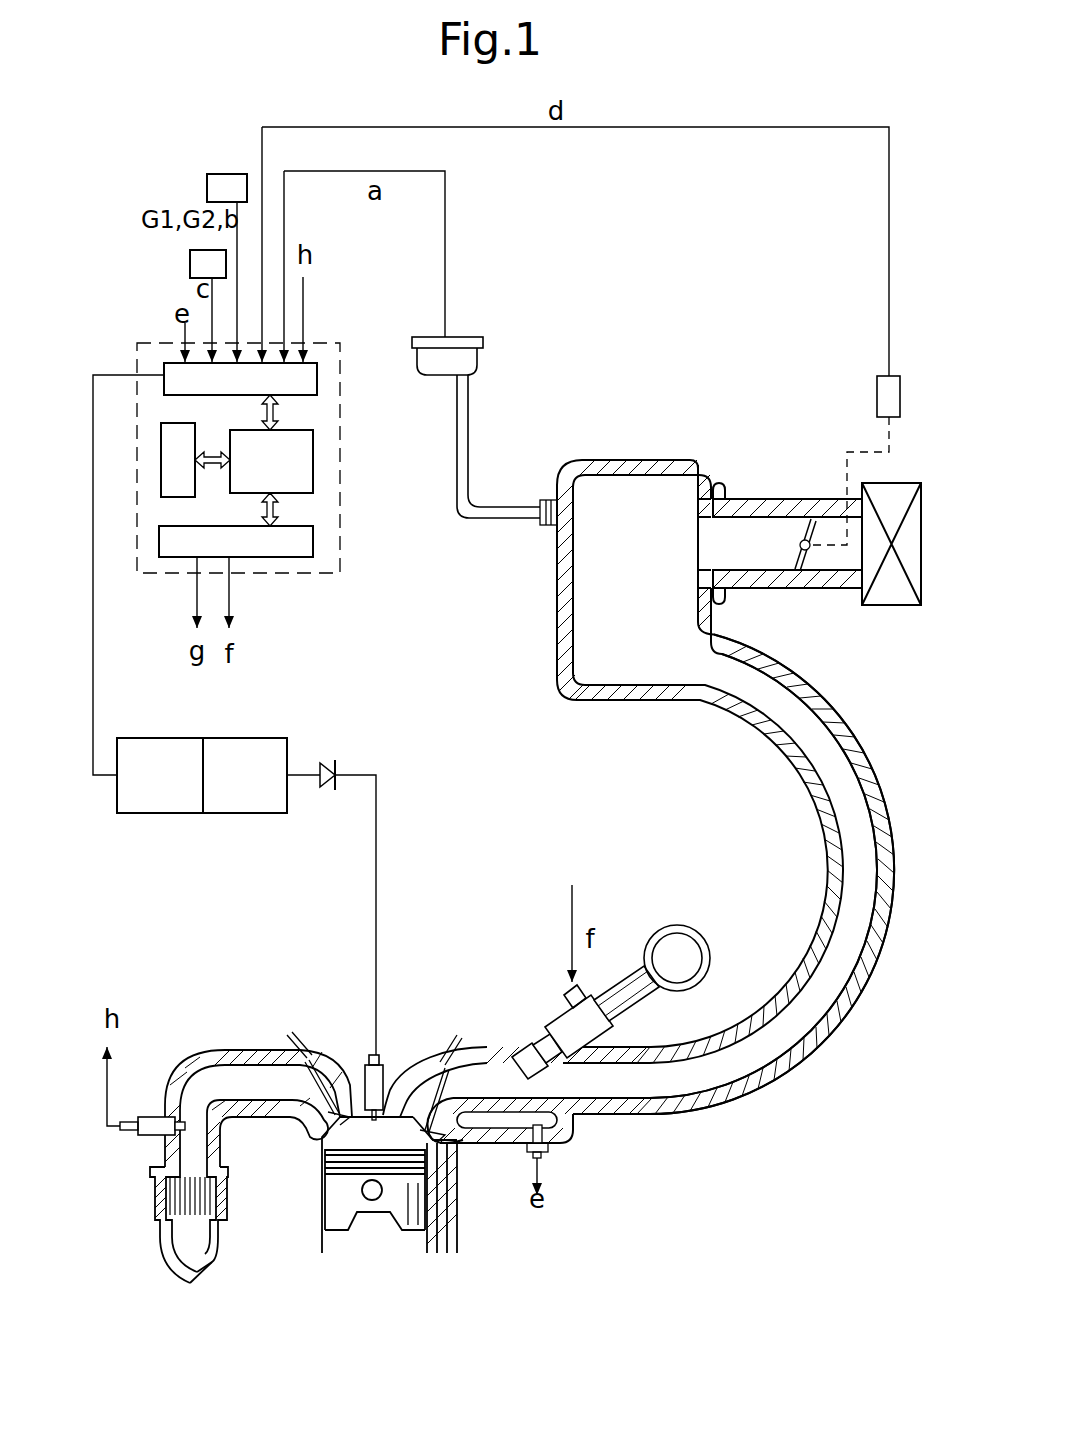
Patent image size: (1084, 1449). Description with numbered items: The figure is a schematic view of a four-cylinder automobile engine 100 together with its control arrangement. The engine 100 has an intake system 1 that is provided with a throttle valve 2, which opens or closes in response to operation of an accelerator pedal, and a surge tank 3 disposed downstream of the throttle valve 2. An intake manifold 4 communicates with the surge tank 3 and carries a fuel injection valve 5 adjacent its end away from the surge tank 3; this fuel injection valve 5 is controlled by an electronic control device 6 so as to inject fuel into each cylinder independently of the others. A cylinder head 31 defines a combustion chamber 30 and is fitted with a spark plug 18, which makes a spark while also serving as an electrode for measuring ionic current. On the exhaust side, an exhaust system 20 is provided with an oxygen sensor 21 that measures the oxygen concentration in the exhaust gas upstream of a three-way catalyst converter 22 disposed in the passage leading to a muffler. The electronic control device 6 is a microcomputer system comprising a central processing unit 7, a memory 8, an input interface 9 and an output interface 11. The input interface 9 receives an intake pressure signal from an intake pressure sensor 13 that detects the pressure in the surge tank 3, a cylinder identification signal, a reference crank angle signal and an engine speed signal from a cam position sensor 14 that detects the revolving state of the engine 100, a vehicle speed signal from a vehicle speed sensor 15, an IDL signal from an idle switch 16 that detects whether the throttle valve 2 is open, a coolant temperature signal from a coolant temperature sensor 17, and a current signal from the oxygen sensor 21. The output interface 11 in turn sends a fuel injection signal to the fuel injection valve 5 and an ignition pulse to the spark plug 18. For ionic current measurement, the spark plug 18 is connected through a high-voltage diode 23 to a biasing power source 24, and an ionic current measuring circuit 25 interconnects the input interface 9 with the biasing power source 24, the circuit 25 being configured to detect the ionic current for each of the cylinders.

The intake system 1 is at (805, 667).
The throttle valve 2 is at (812, 560).
The surge tank 3 is at (593, 657).
The intake manifold 4 is at (825, 935).
The fuel injection valve 5 is at (560, 1013).
The electronic control device 6 is at (340, 447).
The central processing unit 7 is at (313, 485).
The memory 8 is at (161, 447).
The input interface 9 is at (315, 360).
The output interface 11 is at (303, 557).
The intake pressure sensor 13 is at (415, 371).
The cam position sensor 14 is at (215, 172).
The vehicle speed sensor 15 is at (190, 272).
The idle switch 16 is at (877, 410).
The coolant temperature sensor 17 is at (545, 1152).
The spark plug 18 is at (393, 1050).
The exhaust system 20 is at (238, 1043).
The oxygen sensor 21 is at (150, 1115).
The three-way catalyst converter 22 is at (193, 1200).
The high-voltage diode 23 is at (327, 787).
The biasing power source 24 is at (248, 813).
The ionic current measuring circuit 25 is at (162, 813).
The combustion chamber 30 is at (397, 1142).
The cylinder head 31 is at (340, 1050).
The engine 100 is at (702, 1178).